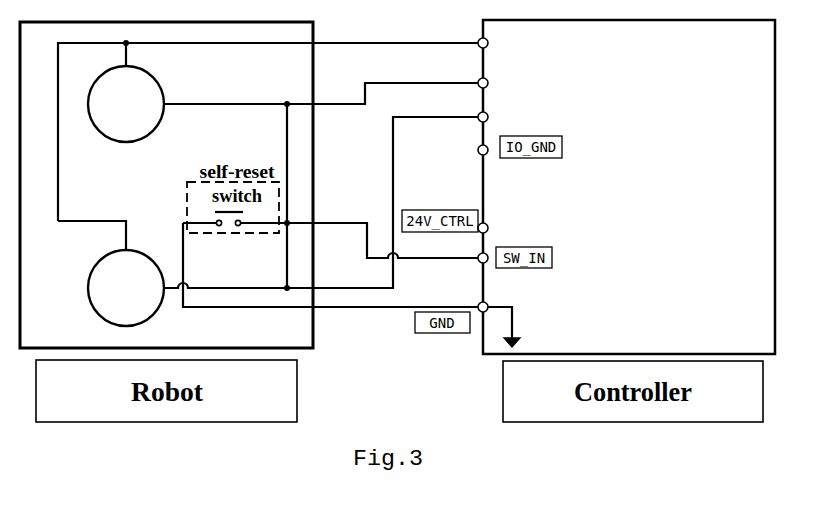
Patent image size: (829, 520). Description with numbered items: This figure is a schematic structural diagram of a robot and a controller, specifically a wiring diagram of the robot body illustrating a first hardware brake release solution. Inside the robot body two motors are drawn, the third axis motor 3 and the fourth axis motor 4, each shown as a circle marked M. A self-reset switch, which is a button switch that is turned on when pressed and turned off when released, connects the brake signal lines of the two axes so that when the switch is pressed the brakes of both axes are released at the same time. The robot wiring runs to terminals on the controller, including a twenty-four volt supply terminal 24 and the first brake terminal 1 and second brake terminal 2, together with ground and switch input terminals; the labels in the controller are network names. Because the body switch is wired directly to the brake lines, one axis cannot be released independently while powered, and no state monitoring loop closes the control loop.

The third axis motor 3 is at (126, 114).
The fourth axis motor 4 is at (126, 297).
The IO_24V terminal 24 is at (520, 38).
The BRK1 brake terminal 1 is at (451, 71).
The BRK2 brake terminal 2 is at (451, 127).